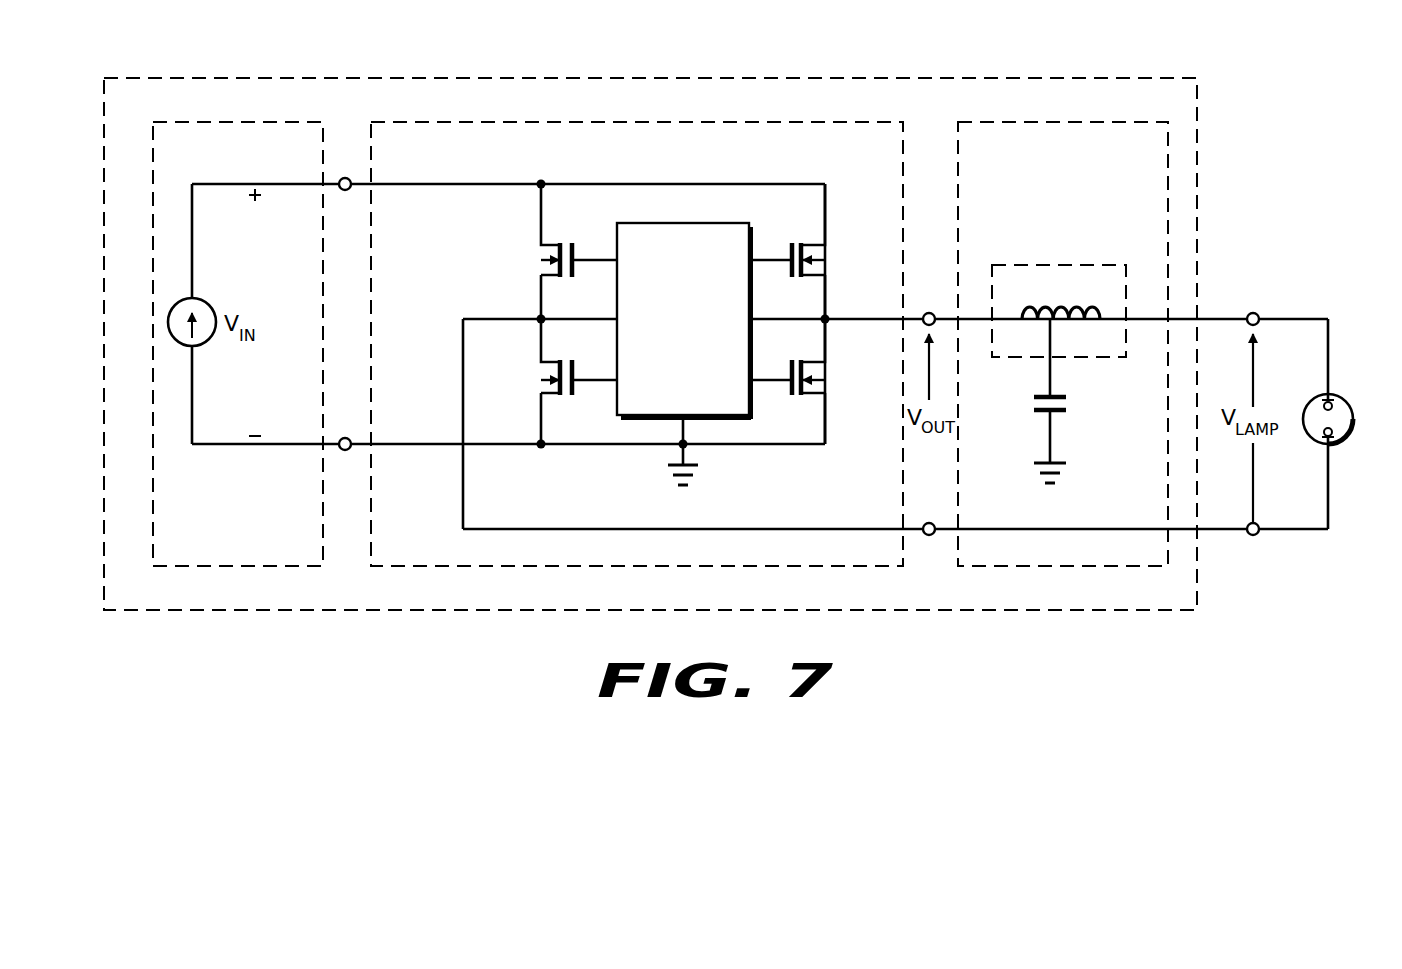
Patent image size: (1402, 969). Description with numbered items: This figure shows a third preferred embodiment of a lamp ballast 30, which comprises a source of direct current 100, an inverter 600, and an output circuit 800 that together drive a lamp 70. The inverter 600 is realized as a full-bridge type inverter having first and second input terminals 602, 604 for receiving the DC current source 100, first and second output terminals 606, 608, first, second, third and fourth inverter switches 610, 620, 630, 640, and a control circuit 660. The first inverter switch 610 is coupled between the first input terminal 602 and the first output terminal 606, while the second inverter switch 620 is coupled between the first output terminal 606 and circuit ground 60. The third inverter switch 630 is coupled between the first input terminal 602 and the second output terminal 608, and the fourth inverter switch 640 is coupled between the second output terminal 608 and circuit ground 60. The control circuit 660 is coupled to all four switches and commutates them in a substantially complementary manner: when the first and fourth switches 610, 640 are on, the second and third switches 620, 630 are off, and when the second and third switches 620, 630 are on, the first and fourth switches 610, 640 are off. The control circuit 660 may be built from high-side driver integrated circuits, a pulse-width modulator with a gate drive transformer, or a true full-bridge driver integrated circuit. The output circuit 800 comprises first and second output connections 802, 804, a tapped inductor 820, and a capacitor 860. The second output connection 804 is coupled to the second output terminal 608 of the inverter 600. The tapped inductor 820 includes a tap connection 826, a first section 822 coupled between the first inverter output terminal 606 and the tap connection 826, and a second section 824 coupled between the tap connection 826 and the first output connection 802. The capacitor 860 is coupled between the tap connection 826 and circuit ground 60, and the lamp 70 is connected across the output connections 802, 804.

The ballast 30 is at (722, 78).
The source of direct current 100 is at (203, 122).
The first input terminal 602 is at (345, 177).
The second input terminal 604 is at (345, 451).
The inverter 600 is at (733, 122).
The control circuit 660 is at (682, 223).
The third inverter switch 630 is at (538, 261).
The fourth inverter switch 640 is at (538, 380).
The first inverter switch 610 is at (810, 260).
The second inverter switch 620 is at (810, 380).
The circuit ground 60 is at (687, 450).
The first output terminal 606 is at (929, 312).
The second output terminal 608 is at (929, 536).
The output circuit 800 is at (1048, 122).
The tapped inductor 820 is at (1059, 314).
The first section 822 is at (1045, 302).
The second section 824 is at (1068, 302).
The tap connection 826 is at (1053, 340).
The capacitor 860 is at (1058, 397).
The first output connection 802 is at (1253, 312).
The second output connection 804 is at (1256, 536).
The lamp 70 is at (1352, 432).